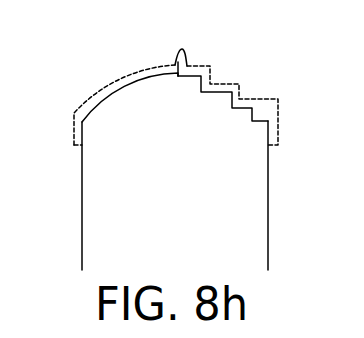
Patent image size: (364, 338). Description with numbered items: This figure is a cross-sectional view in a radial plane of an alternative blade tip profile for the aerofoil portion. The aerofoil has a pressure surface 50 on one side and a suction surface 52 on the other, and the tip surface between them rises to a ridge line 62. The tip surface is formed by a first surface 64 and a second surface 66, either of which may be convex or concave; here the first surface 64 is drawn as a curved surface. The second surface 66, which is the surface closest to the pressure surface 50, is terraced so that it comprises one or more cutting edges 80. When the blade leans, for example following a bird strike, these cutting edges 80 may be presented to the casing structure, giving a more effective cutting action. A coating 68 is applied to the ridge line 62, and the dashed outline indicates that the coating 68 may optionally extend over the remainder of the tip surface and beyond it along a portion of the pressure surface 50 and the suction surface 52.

The pressure surface 50 is at (268, 222).
The suction surface 52 is at (82, 222).
The ridge line 62 is at (174, 61).
The first surface 64 is at (108, 123).
The second surface 66 is at (203, 93).
The coating 68 is at (145, 88).
The cutting edges 80 is at (223, 83).